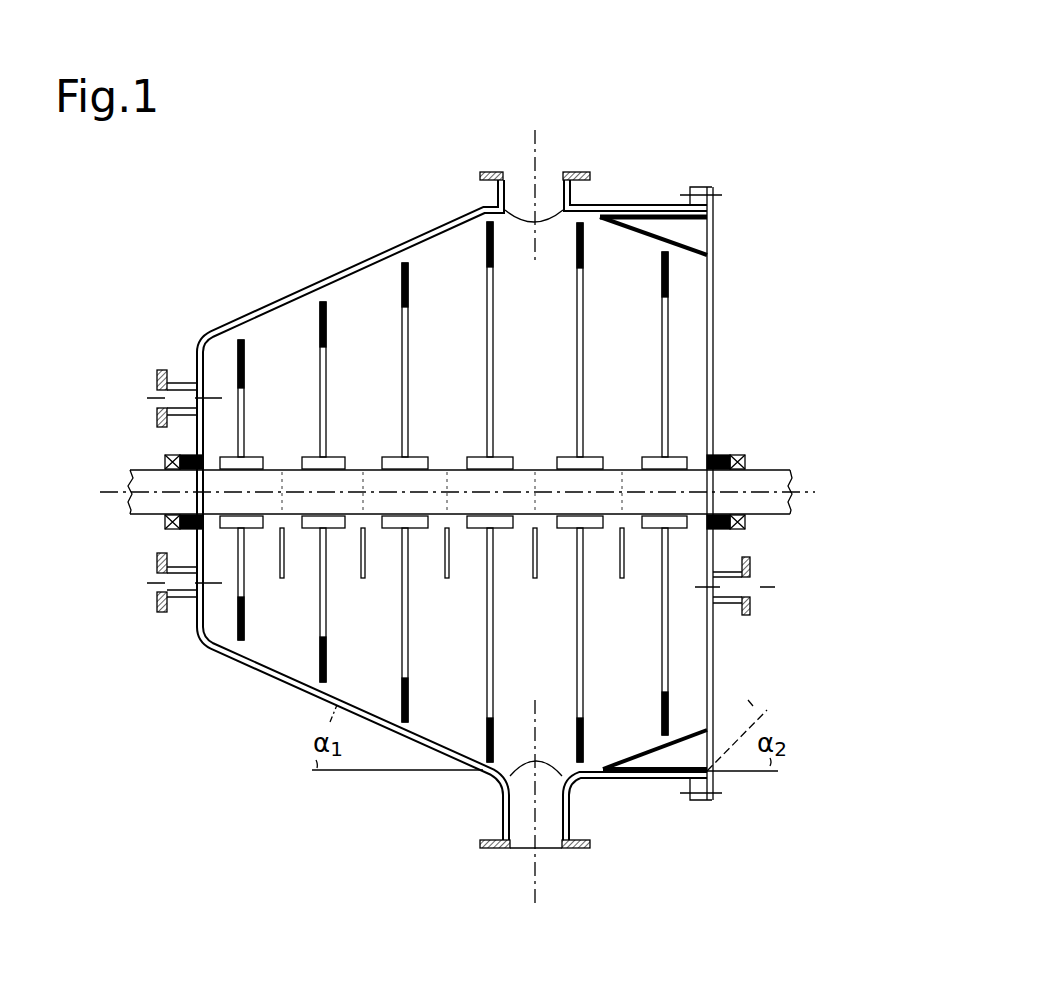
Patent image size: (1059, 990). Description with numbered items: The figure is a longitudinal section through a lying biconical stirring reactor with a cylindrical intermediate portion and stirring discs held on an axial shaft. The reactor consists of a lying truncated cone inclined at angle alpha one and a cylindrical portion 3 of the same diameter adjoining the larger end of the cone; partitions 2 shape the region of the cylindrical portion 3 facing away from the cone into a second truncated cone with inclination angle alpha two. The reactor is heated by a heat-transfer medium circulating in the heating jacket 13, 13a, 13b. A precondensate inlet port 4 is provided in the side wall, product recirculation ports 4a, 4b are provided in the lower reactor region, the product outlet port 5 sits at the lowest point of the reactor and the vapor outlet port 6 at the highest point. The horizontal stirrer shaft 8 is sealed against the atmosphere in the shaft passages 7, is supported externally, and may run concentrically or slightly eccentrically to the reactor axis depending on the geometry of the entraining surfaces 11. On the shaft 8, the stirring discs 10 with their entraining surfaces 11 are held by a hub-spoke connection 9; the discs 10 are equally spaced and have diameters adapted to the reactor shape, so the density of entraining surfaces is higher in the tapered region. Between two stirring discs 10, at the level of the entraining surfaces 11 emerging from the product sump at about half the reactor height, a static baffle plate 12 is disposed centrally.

The partitions 2 is at (707, 772).
The cylindrical portion 3 is at (593, 203).
The precondensate inlet port 4 is at (158, 372).
The product recirculation port 4a is at (158, 577).
The product recirculation port 4b is at (745, 587).
The product outlet port 5 is at (482, 845).
The vapor outlet port 6 is at (577, 170).
The shaft passages 7 is at (168, 458).
The horizontal stirrer shaft 8 is at (790, 472).
The hub-spoke connection 9 is at (314, 456).
The stirring discs 10 is at (578, 318).
The entraining surfaces 11 is at (405, 303).
The static baffle plate 12 is at (362, 572).
The heating jacket 13 is at (212, 340).
The heating jacket 13a is at (710, 372).
The heating jacket 13b is at (692, 240).